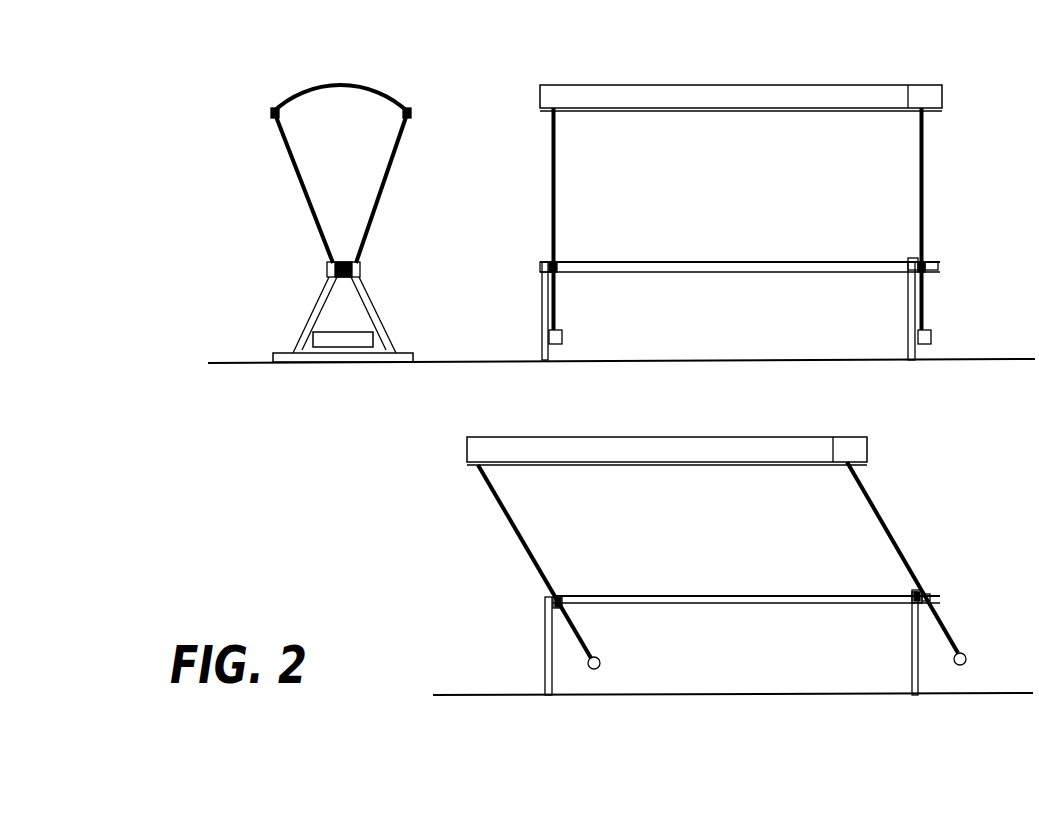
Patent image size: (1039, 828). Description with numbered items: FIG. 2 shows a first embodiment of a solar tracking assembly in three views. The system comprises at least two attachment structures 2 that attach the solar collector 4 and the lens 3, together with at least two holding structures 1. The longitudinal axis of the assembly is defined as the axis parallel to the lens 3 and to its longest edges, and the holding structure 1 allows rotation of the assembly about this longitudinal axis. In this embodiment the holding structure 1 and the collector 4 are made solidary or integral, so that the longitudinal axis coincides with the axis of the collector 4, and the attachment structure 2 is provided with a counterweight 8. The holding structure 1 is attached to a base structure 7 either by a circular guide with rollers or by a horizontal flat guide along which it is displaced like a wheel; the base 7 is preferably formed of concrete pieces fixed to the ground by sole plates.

The holding structure 1 is at (362, 267).
The attachment structure 2 is at (385, 188).
The lens 3 is at (385, 98).
The solar collector 4 is at (330, 262).
The base structure 7 is at (385, 360).
The counterweight 8 is at (312, 335).